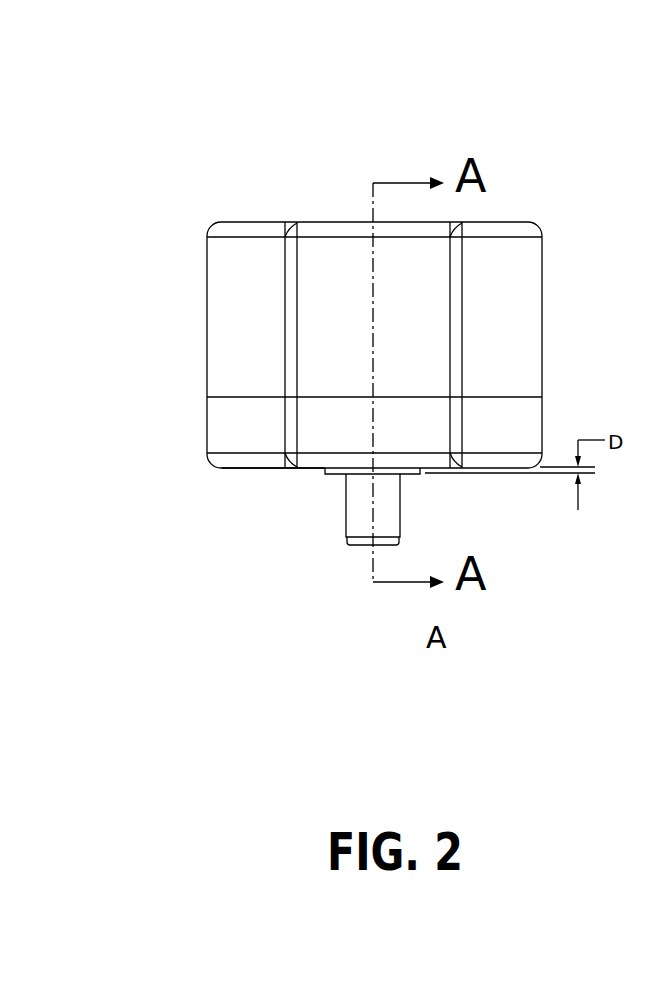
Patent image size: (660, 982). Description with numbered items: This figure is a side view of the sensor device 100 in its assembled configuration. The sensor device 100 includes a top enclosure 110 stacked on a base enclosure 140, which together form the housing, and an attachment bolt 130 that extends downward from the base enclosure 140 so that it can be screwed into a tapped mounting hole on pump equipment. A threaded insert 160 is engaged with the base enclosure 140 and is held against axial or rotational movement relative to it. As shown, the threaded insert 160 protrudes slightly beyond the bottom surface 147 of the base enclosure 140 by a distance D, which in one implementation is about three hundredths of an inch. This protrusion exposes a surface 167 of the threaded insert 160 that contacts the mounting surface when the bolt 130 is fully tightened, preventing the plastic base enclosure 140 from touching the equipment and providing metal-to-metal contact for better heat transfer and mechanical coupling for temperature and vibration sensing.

The sensor device 100 is at (198, 76).
The top enclosure 110 is at (207, 298).
The base enclosure 140 is at (207, 420).
The bottom surface 147 is at (222, 481).
The threaded insert 160 is at (327, 475).
The surface 167 is at (425, 488).
The attachment bolt 130 is at (346, 527).